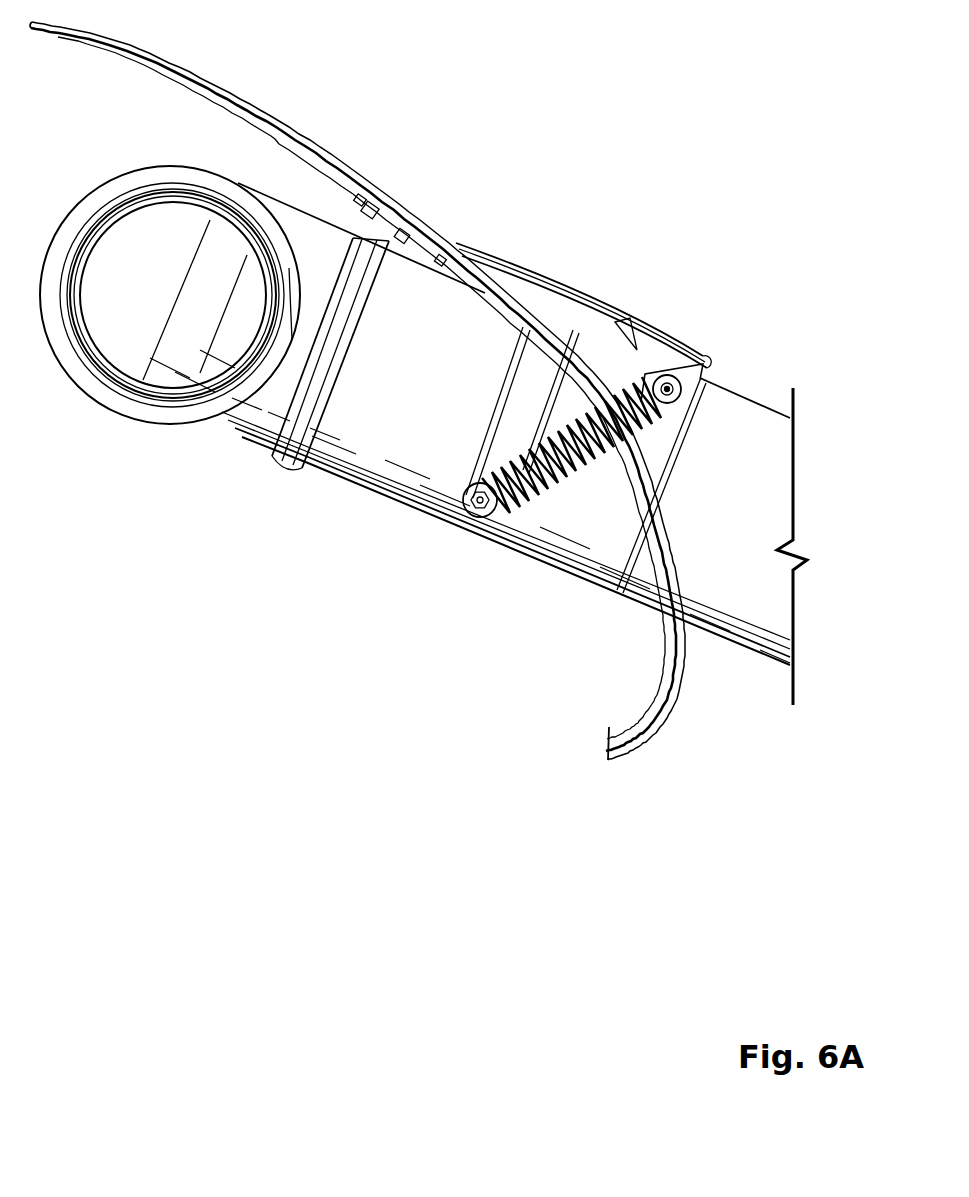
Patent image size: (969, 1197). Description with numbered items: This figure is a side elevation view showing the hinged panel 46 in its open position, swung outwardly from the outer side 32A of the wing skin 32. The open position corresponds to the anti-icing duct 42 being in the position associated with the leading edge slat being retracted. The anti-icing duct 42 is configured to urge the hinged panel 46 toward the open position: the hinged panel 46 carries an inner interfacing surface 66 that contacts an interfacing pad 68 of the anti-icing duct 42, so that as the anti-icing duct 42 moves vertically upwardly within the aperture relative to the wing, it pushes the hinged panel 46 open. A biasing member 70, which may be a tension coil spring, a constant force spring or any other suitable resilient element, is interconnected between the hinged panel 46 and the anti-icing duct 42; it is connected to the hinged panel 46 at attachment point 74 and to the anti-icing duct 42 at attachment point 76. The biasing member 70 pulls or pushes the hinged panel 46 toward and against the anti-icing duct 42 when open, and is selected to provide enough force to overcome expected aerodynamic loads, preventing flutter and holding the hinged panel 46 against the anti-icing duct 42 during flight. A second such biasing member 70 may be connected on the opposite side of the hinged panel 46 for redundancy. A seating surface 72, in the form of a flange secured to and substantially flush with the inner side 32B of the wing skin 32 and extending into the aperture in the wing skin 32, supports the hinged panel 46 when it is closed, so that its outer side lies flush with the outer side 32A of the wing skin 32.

The wing skin 32 is at (362, 88).
The outer side of wing skin 32A is at (303, 135).
The inner side of wing skin 32B is at (183, 86).
The anti-icing duct 42 is at (741, 575).
The hinged panel 46 is at (585, 285).
The inner interfacing surface 66 is at (714, 359).
The interfacing pad 68 is at (661, 486).
The biasing member 70 is at (552, 497).
The seating surface 72 is at (547, 357).
The attachment point 74 is at (670, 375).
The attachment point 76 is at (480, 500).